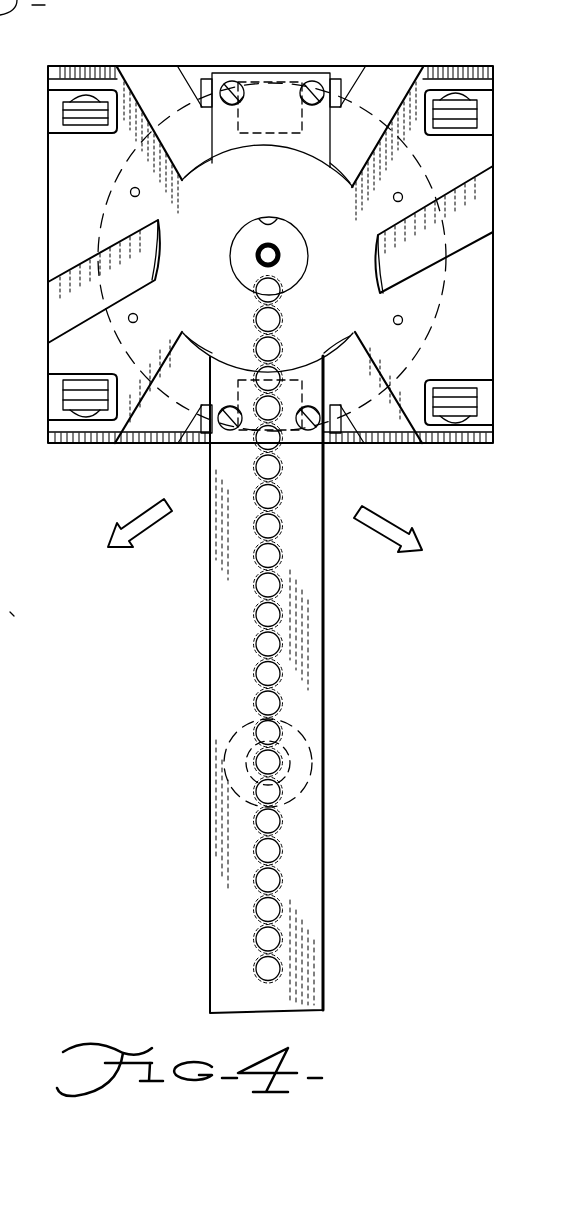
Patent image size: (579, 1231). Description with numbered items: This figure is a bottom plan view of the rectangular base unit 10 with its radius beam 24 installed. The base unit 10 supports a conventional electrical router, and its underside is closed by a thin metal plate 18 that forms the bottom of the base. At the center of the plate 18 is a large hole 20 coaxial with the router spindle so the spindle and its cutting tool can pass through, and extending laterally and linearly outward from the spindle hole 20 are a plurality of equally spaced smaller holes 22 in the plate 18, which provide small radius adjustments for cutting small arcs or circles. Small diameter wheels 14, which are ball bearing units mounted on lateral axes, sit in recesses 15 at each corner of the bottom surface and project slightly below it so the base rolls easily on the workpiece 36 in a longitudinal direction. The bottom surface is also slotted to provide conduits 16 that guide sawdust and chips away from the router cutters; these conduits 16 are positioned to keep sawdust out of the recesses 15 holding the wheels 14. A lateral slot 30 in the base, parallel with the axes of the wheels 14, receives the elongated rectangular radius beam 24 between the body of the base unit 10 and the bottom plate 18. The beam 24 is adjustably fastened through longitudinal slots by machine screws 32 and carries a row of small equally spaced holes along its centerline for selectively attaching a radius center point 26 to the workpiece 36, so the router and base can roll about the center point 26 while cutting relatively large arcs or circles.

The rectangular base unit 10 is at (284, 43).
The small diameter wheels 14 is at (93, 110).
The recesses 15 is at (108, 92).
The conduits 16 is at (172, 110).
The thin metal plate 18 is at (204, 298).
The large hole 20 is at (274, 217).
The smaller holes 22 is at (130, 192).
The radius beam 24 is at (220, 605).
The radius center point 26 is at (274, 763).
The lateral slot 30 is at (298, 146).
The machine screws 32 is at (318, 98).
The workpiece 36 is at (10, 630).